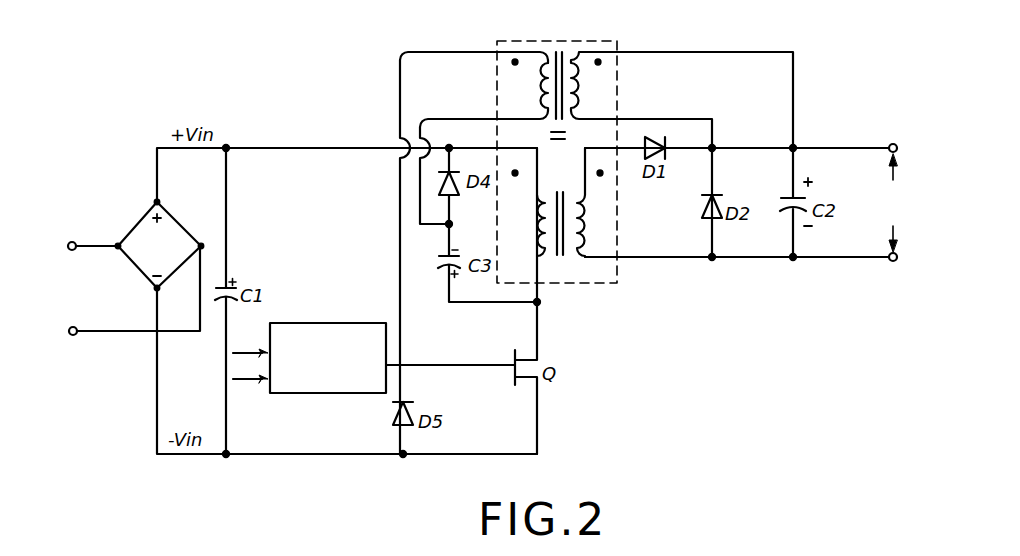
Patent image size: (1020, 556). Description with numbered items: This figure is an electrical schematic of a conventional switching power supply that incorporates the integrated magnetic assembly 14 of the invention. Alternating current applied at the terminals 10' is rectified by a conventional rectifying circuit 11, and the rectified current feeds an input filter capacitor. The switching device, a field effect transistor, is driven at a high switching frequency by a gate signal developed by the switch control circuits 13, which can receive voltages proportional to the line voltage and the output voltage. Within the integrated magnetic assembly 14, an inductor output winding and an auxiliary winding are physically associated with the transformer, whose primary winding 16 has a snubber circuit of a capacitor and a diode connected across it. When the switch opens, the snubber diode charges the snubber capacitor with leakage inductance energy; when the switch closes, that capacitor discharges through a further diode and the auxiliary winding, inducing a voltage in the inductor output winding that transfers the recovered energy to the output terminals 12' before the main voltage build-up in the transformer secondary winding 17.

The terminals 10' is at (123, 288).
The rectifying circuit 11 is at (172, 213).
The output terminals 12' is at (927, 202).
The switch control circuits 13 is at (312, 395).
The integrated magnetic assembly 14 is at (675, 153).
The transformer primary winding 16 is at (536, 226).
The transformer secondary winding 17 is at (582, 226).